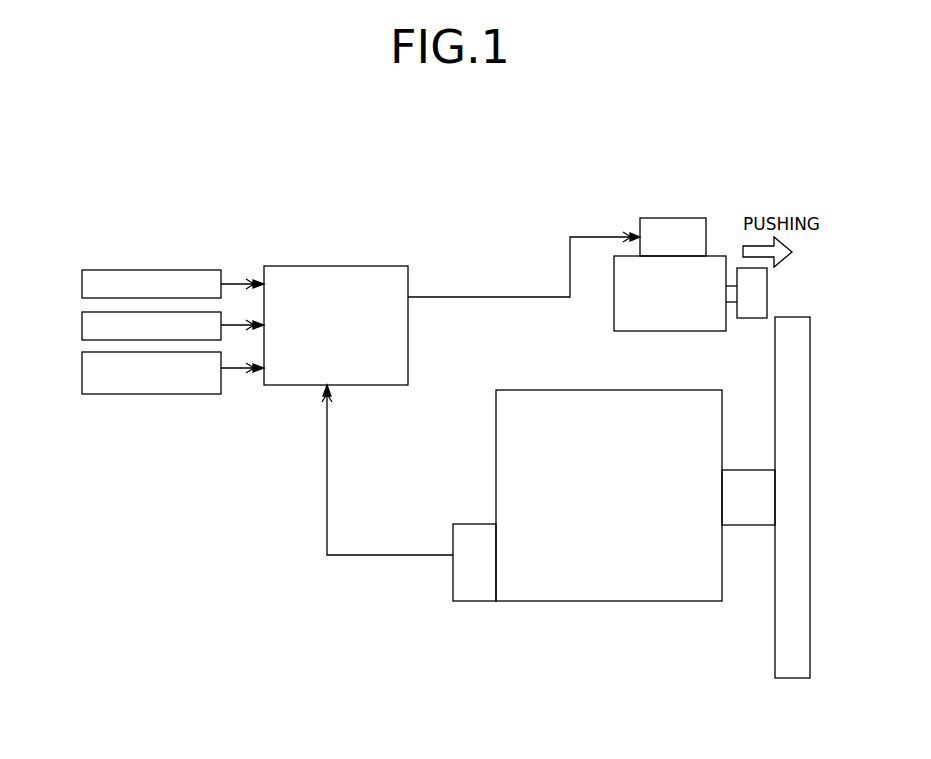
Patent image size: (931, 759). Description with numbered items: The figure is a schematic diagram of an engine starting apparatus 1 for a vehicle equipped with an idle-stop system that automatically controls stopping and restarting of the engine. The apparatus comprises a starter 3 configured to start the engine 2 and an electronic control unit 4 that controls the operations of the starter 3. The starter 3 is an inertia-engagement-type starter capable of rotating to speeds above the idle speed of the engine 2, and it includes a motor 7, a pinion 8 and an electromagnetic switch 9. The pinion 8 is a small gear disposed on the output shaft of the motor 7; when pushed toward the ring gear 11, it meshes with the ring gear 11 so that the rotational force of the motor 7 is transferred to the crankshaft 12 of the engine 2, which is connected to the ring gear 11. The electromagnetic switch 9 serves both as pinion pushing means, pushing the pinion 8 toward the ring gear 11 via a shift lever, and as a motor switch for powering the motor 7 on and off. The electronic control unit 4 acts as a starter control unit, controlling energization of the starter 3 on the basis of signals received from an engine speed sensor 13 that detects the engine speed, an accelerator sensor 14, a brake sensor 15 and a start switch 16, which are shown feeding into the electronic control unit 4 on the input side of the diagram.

The engine starting apparatus 1 is at (821, 121).
The engine 2 is at (609, 608).
The starter 3 is at (707, 194).
The electronic control unit 4 is at (392, 262).
The motor 7 is at (624, 315).
The pinion 8 is at (757, 283).
The electromagnetic switch 9 is at (683, 232).
The ring gear 11 is at (800, 382).
The crankshaft 12 is at (755, 505).
The engine speed sensor 13 is at (474, 582).
The accelerator sensor 14 is at (82, 375).
The brake sensor 15 is at (82, 325).
The start switch 16 is at (82, 283).